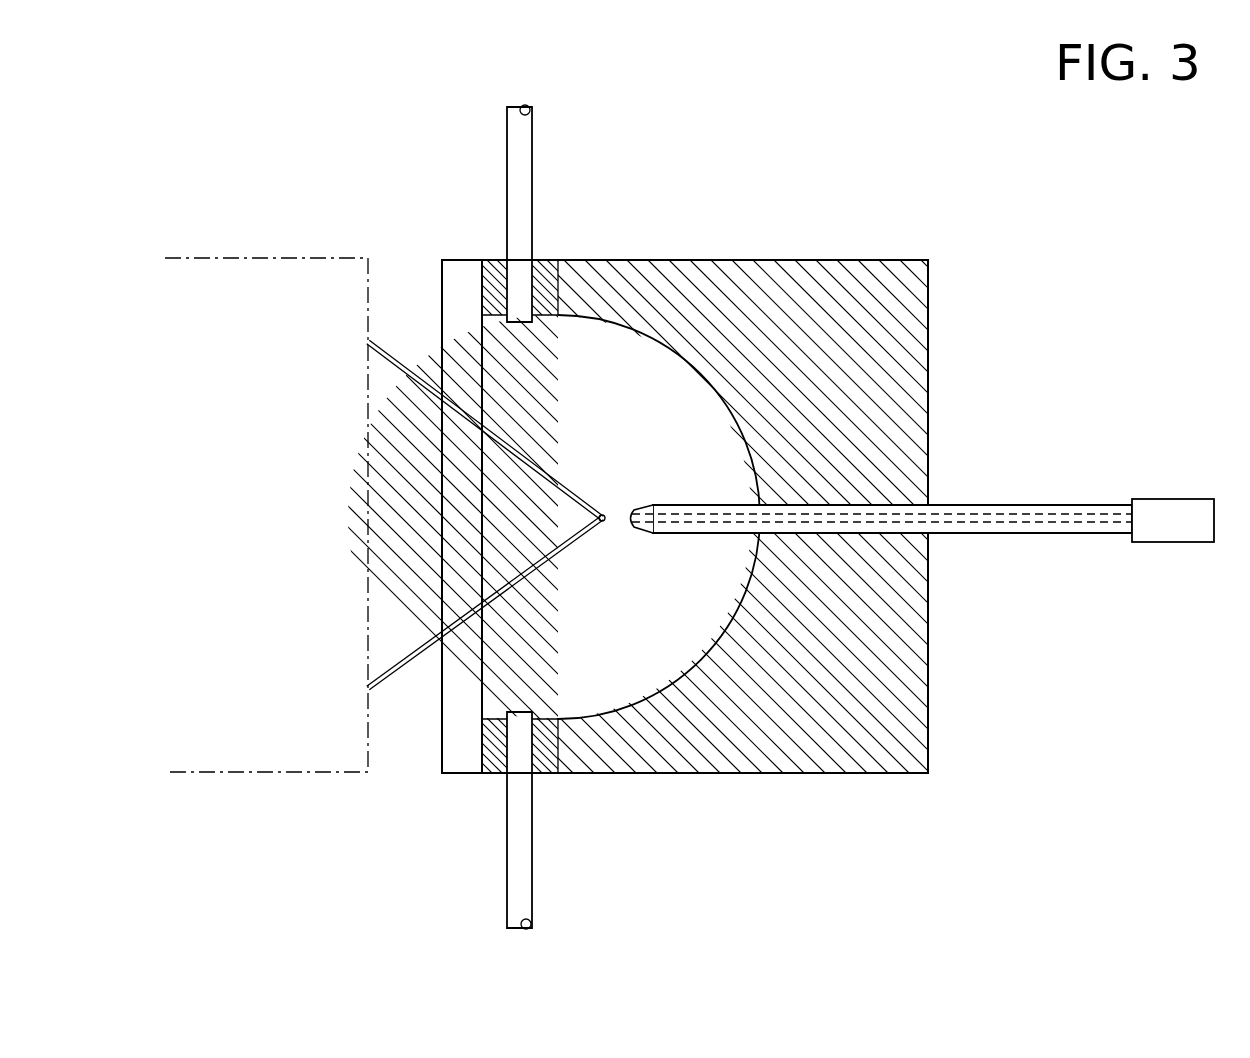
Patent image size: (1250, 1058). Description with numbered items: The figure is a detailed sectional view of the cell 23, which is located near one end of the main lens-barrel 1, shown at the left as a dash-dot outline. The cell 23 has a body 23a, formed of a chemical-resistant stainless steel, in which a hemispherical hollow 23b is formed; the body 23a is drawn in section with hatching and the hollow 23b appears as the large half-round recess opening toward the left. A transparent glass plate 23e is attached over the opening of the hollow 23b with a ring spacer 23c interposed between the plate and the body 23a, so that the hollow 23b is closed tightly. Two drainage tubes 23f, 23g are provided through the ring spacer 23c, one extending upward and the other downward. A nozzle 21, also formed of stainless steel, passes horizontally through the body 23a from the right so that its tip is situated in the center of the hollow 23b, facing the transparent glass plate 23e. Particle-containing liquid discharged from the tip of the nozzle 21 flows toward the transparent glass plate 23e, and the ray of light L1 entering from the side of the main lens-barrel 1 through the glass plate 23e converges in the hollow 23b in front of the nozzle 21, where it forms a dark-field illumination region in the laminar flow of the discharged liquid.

The main lens-barrel 1 is at (222, 258).
The ray of light L1 is at (408, 358).
The nozzle 21 is at (1012, 505).
The cell 23 is at (655, 498).
The body 23a is at (876, 272).
The hemispherical hollow 23b is at (605, 345).
The ring spacer 23c is at (545, 262).
The transparent glass plate 23e is at (460, 262).
The drainage tube 23f is at (533, 140).
The drainage tube 23g is at (535, 842).